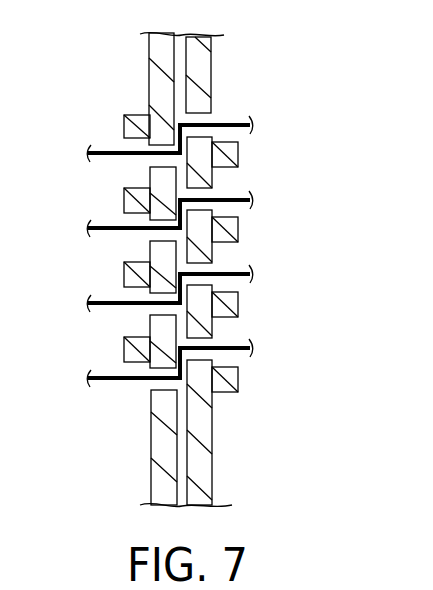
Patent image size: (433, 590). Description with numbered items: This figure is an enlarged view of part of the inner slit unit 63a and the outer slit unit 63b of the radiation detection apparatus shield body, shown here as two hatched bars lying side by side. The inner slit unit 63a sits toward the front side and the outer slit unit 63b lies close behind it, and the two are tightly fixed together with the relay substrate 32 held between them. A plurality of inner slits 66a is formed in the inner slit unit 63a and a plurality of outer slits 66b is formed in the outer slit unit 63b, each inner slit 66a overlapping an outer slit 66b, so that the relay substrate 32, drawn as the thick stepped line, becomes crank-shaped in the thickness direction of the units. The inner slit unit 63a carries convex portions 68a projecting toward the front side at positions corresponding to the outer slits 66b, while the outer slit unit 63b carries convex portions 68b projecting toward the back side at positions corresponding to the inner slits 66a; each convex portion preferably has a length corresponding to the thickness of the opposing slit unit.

The inner slit unit 63a is at (149, 52).
The outer slit unit 63b is at (212, 44).
The relay substrate 32 is at (222, 124).
The convex portion of the inner slit unit 68a is at (124, 117).
The convex portion of the outer slit unit 68b is at (238, 162).
The inner slit 66a is at (151, 391).
The outer slit 66b is at (220, 361).